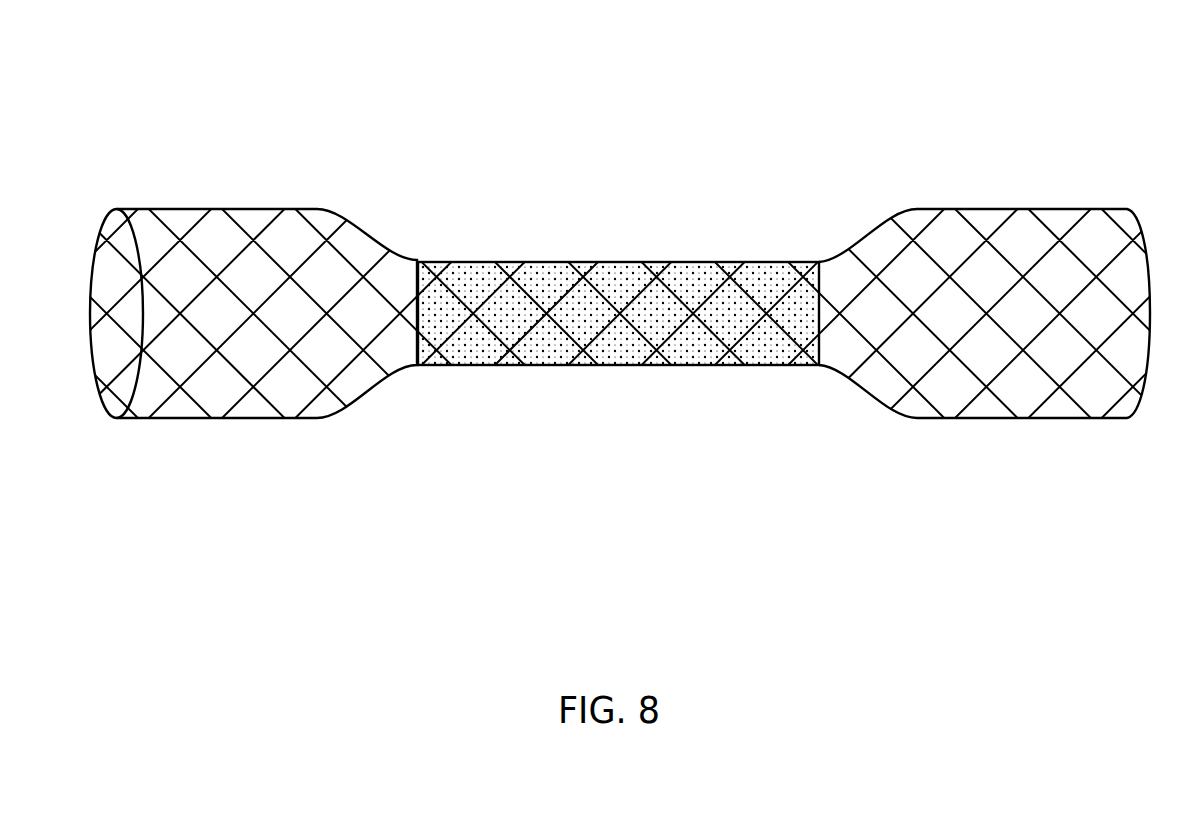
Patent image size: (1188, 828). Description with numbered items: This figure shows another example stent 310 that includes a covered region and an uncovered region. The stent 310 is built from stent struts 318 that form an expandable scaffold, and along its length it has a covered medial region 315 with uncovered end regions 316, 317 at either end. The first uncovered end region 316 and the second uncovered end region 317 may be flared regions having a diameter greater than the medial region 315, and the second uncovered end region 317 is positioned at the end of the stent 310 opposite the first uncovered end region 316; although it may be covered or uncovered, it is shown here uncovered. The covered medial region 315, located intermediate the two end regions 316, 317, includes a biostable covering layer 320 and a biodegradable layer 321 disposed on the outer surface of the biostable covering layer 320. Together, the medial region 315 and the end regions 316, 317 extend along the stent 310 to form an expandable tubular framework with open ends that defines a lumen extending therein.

The stent 310 is at (672, 70).
The covered medial region 315 is at (819, 382).
The first uncovered end region 316 is at (1140, 168).
The second uncovered end region 317 is at (420, 168).
The stent struts 318 is at (246, 407).
The biostable covering layer 320 is at (620, 262).
The biodegradable layer 321 is at (467, 280).